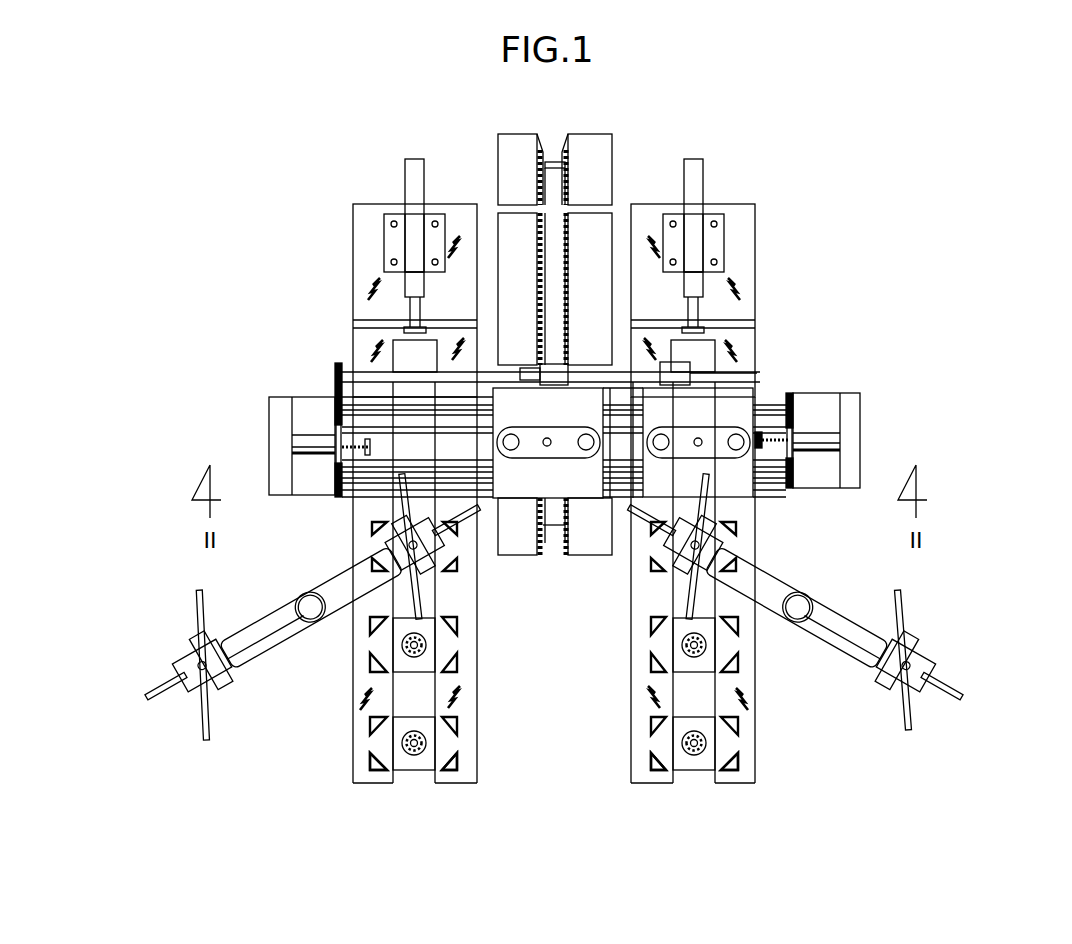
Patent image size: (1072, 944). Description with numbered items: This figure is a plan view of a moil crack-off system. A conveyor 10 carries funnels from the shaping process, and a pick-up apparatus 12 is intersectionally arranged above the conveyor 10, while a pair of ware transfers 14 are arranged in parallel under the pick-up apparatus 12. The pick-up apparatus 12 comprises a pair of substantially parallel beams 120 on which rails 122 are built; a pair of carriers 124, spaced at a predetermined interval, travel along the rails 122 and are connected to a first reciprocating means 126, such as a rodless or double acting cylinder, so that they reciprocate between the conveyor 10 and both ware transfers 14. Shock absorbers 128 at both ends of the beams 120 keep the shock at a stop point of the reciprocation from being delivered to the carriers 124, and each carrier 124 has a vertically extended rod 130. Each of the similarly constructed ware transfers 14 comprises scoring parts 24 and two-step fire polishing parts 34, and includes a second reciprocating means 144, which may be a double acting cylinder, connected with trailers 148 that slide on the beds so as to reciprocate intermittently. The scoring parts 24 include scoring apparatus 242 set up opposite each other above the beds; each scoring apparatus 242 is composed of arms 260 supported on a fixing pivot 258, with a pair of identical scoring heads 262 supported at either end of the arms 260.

The conveyor 10 is at (600, 159).
The pick-up apparatus 12 is at (885, 418).
The ware transfers 14 is at (338, 730).
The scoring parts 24 is at (645, 552).
The two-step fire polishing parts 34 is at (645, 648).
The beams 120 is at (368, 400).
The rails 122 is at (360, 478).
The carriers 124 is at (738, 488).
The first reciprocating means 126 is at (714, 366).
The shock absorbers 128 is at (305, 440).
The rod 130 is at (696, 446).
The second reciprocating means 144 is at (410, 172).
The trailers 148 is at (636, 762).
The scoring apparatus 242 is at (568, 602).
The fixing pivot 258 is at (306, 600).
The arms 260 is at (279, 635).
The scoring heads 262 is at (392, 550).